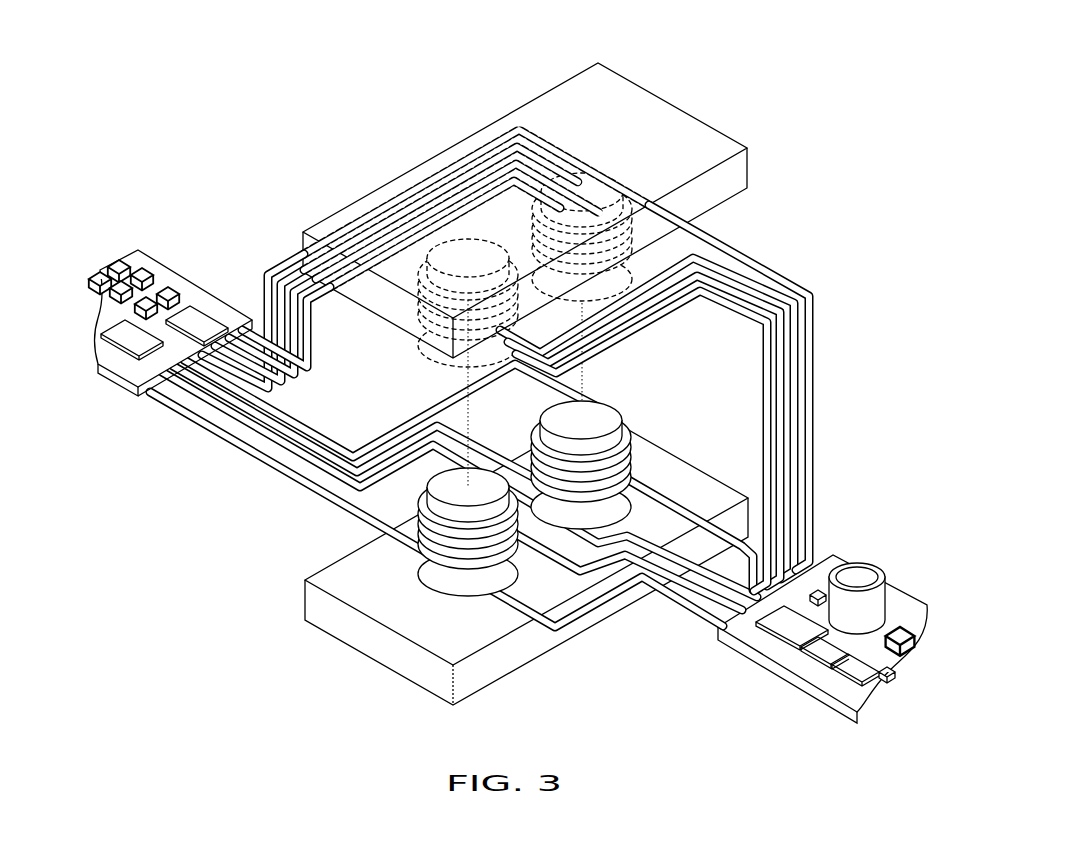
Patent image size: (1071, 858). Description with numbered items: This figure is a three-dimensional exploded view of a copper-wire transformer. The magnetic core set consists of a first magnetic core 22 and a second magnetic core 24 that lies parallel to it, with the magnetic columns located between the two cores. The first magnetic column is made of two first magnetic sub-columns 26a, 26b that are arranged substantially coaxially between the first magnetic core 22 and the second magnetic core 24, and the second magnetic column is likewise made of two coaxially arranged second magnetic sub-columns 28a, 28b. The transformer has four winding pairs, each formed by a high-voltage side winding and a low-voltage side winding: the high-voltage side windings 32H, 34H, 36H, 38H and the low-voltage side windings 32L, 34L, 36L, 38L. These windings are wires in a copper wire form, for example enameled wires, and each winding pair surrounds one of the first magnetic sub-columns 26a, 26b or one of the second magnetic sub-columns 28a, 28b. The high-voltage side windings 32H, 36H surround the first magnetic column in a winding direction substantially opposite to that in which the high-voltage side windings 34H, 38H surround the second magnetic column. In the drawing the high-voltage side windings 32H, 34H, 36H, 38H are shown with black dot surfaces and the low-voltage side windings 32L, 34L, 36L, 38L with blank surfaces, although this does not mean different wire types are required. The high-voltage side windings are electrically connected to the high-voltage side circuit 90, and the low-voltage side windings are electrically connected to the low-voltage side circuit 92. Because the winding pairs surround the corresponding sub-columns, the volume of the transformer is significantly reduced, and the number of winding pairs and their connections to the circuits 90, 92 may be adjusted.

The first magnetic core 22 is at (408, 205).
The second magnetic core 24 is at (717, 488).
The first magnetic sub-column 26a is at (455, 225).
The first magnetic sub-column 26b is at (383, 527).
The second magnetic sub-column 28a is at (592, 178).
The second magnetic sub-column 28b is at (552, 406).
The high-voltage side winding 32H is at (447, 337).
The low-voltage side winding 32L is at (420, 288).
The high-voltage side winding 34H is at (548, 205).
The low-voltage side winding 34L is at (568, 188).
The high-voltage side winding 36H is at (478, 548).
The low-voltage side winding 36L is at (522, 568).
The high-voltage side winding 38H is at (614, 420).
The low-voltage side winding 38L is at (668, 490).
The high-voltage side circuit 90 is at (185, 300).
The low-voltage side circuit 92 is at (908, 603).